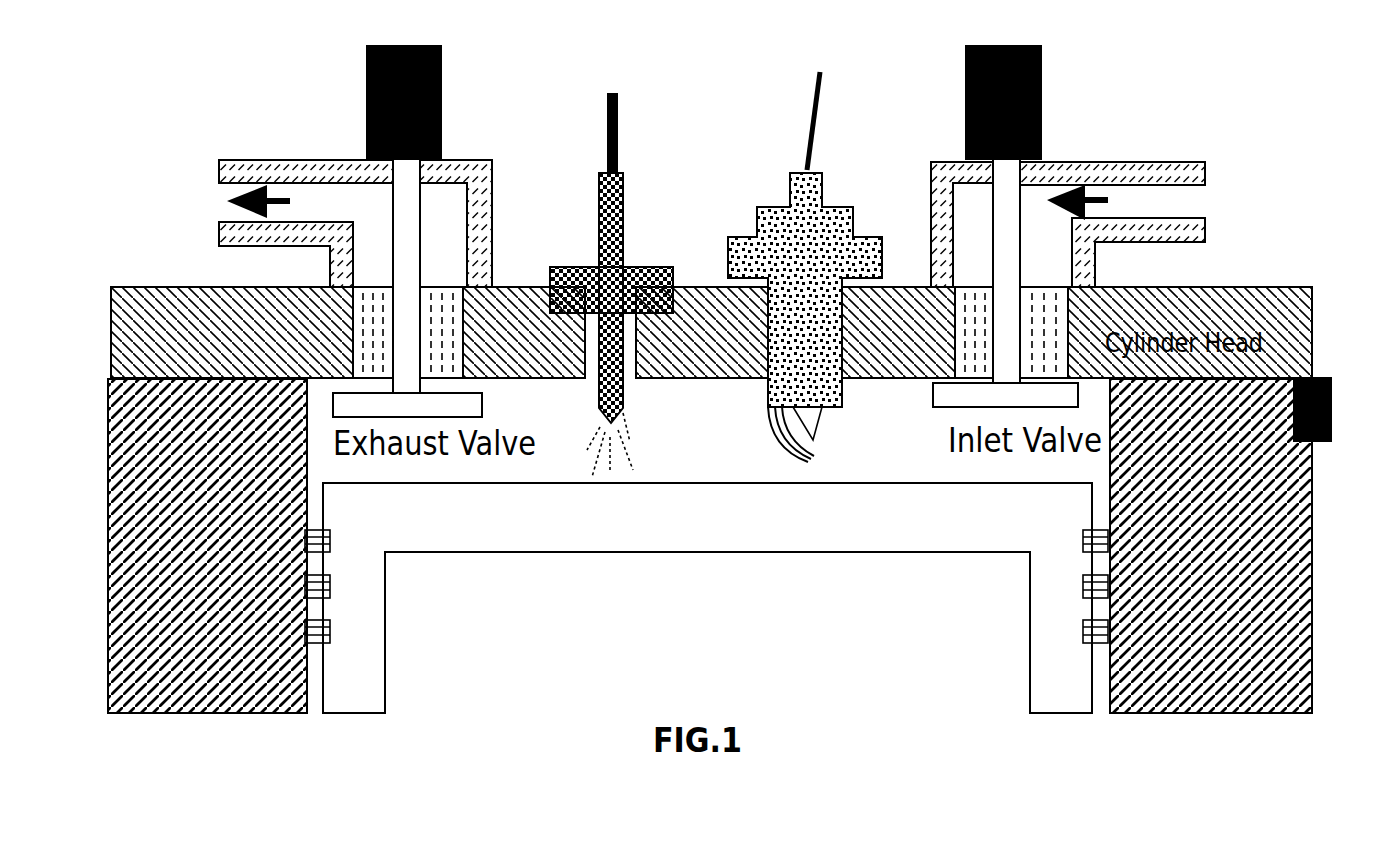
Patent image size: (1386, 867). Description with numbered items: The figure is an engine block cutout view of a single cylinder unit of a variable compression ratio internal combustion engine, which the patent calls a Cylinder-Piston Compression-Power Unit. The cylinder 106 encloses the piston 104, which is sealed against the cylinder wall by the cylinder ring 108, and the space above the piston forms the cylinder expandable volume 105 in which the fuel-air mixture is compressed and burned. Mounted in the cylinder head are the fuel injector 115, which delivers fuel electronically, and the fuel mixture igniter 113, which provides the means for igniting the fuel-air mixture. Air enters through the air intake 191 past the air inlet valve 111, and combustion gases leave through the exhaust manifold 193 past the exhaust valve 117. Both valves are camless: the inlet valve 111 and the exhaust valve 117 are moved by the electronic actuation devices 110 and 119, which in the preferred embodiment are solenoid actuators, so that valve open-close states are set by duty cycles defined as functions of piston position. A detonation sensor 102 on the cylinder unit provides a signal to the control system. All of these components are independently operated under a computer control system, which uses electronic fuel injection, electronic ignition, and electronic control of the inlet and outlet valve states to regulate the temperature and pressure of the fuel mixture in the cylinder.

The detonation sensor 102 is at (1315, 393).
The piston 104 is at (845, 530).
The cylinder expandable volume 105 is at (550, 413).
The cylinder 106 is at (235, 667).
The cylinder ring 108 is at (330, 543).
The electronic actuation device 110 is at (990, 70).
The air inlet valve 111 is at (1018, 287).
The fuel mixture igniter 113 is at (782, 207).
The fuel injector 115 is at (600, 207).
The exhaust valve 117 is at (402, 345).
The electronic actuation device 119 is at (385, 78).
The air intake 191 is at (1127, 200).
The exhaust manifold 193 is at (318, 210).